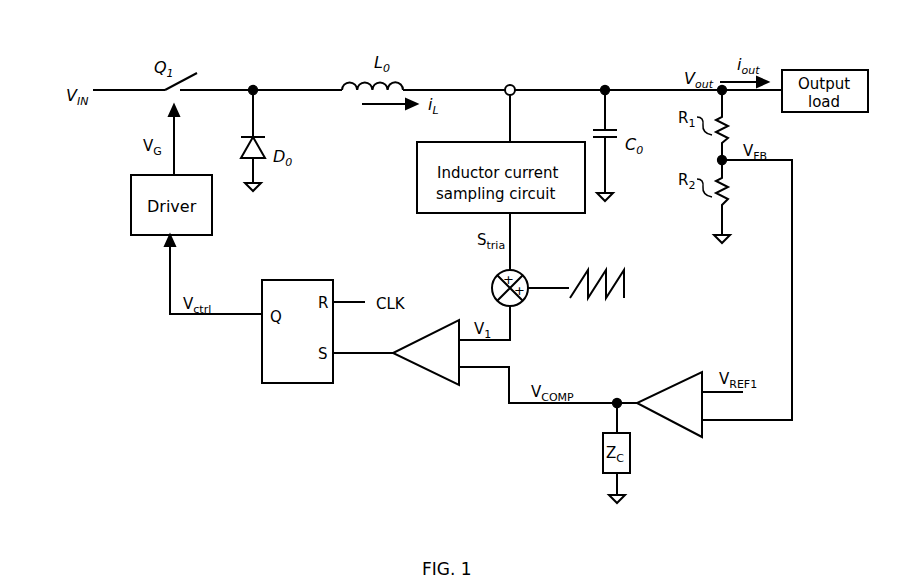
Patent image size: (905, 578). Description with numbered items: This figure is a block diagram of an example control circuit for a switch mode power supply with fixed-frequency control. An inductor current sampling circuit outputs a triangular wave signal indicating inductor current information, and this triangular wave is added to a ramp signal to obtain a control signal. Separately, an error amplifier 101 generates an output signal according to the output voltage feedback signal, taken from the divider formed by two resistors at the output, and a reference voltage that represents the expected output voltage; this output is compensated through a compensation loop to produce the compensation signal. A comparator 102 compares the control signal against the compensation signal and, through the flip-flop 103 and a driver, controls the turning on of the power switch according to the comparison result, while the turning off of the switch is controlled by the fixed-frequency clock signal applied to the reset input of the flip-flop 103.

The error amplifier 101 is at (686, 414).
The comparator 102 is at (444, 362).
The RS flip-flop 103 is at (296, 377).